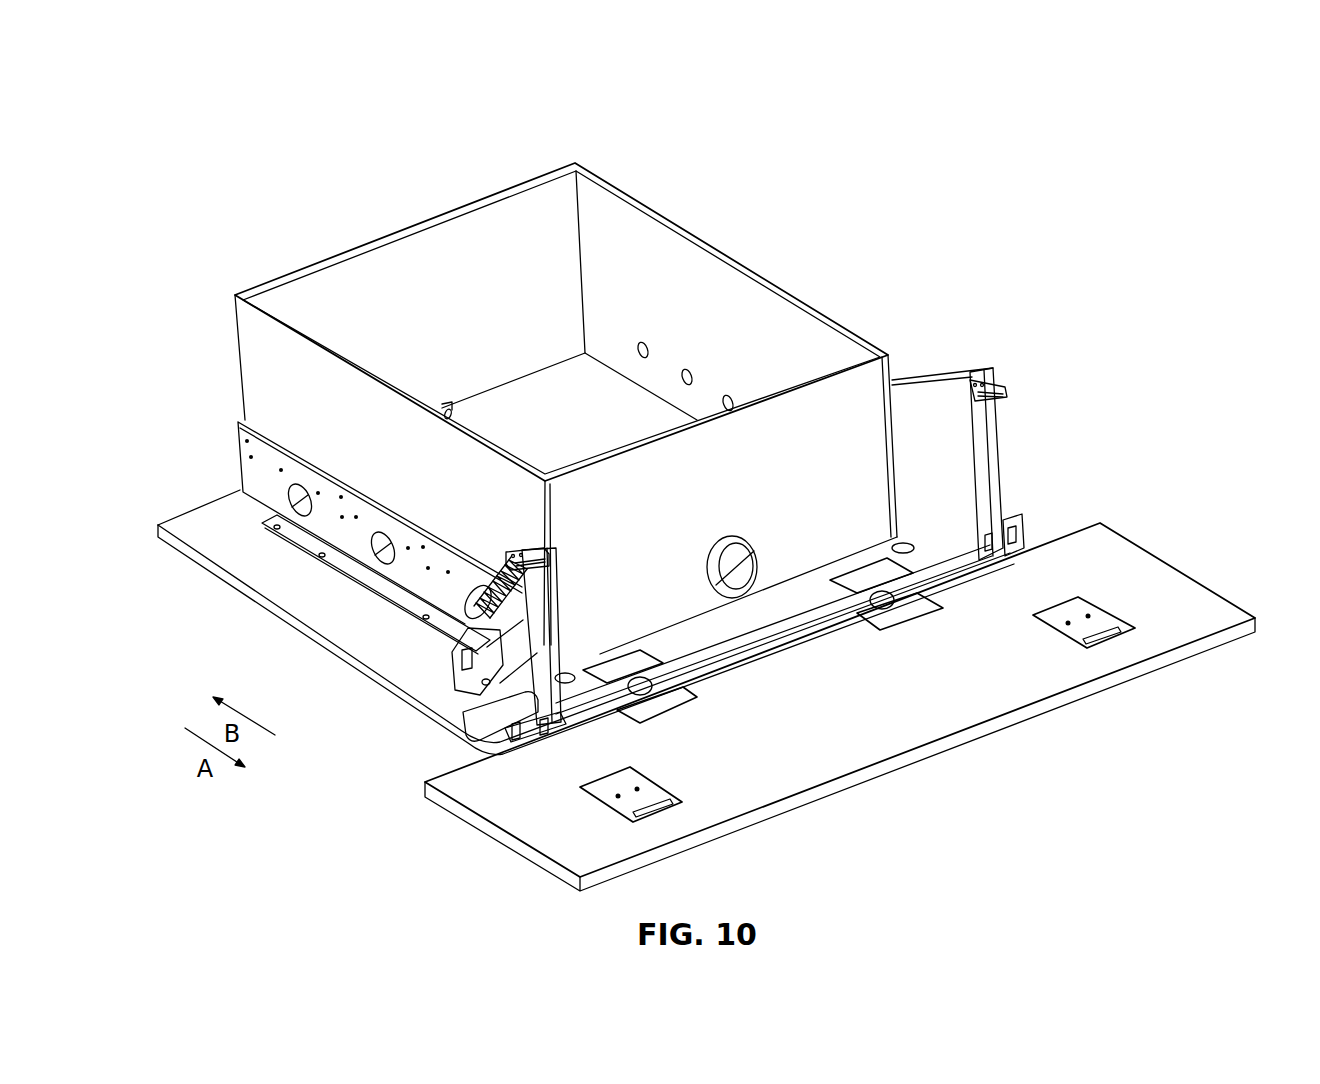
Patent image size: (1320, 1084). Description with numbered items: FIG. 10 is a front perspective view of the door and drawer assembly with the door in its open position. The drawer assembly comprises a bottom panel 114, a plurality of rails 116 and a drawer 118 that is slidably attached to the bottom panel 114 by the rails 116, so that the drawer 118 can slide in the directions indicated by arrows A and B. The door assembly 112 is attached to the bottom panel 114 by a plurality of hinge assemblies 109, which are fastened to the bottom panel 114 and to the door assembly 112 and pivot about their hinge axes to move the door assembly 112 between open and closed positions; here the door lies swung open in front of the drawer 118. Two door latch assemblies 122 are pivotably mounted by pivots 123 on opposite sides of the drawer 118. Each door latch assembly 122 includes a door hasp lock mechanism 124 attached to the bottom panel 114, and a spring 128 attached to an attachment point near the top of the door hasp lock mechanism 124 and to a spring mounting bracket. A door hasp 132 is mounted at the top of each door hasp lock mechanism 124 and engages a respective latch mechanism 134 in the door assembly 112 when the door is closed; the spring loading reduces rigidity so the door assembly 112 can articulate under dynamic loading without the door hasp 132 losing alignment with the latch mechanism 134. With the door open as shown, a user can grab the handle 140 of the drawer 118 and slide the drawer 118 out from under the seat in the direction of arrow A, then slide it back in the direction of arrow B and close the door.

The hinge assemblies 109 is at (679, 673).
The door assembly 112 is at (1099, 519).
The bottom panel 114 is at (330, 646).
The rails 116 is at (243, 475).
The drawer 118 is at (700, 239).
The door latch assembly 122 is at (734, 510).
The pivots 123 is at (545, 732).
The door hasp lock mechanism 124 is at (540, 622).
The spring 128 is at (485, 574).
The door hasp 132 is at (553, 560).
The latch mechanism 134 is at (657, 788).
The handle 140 is at (742, 549).